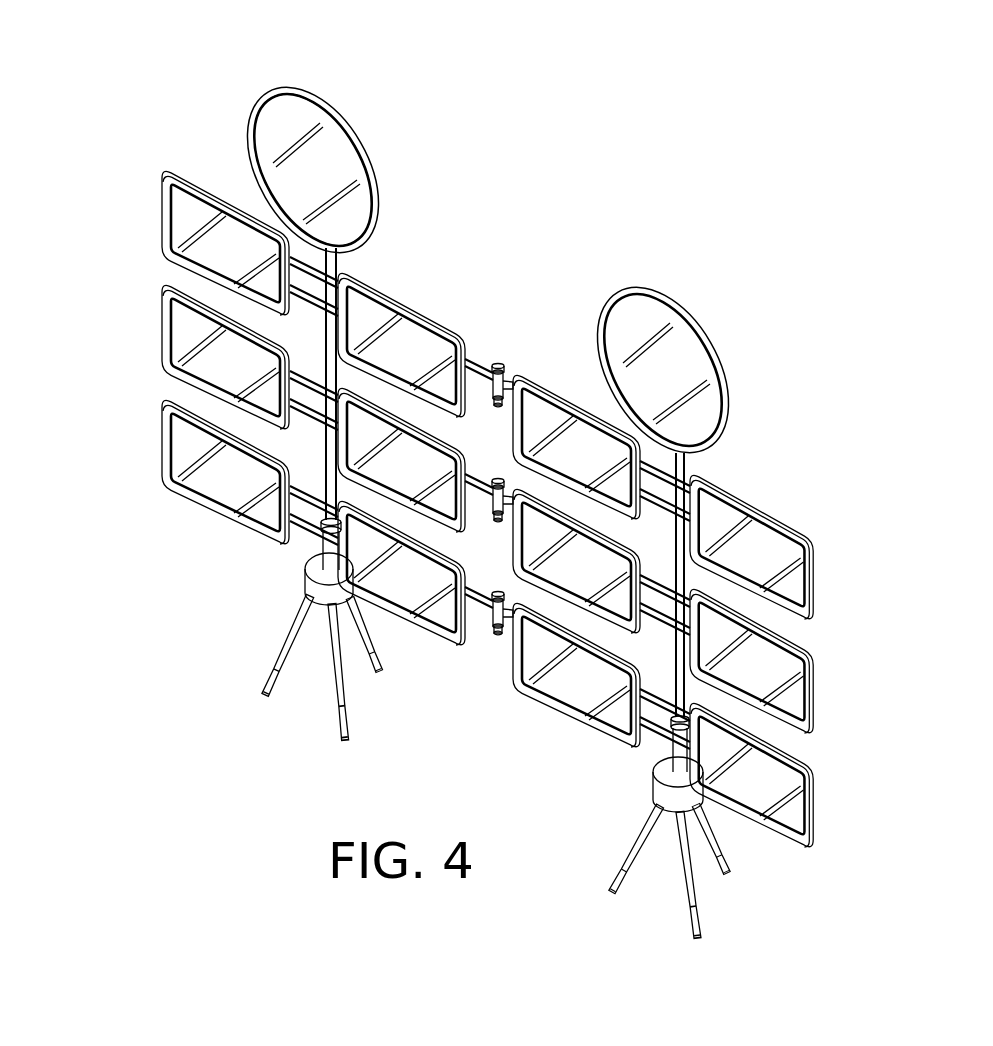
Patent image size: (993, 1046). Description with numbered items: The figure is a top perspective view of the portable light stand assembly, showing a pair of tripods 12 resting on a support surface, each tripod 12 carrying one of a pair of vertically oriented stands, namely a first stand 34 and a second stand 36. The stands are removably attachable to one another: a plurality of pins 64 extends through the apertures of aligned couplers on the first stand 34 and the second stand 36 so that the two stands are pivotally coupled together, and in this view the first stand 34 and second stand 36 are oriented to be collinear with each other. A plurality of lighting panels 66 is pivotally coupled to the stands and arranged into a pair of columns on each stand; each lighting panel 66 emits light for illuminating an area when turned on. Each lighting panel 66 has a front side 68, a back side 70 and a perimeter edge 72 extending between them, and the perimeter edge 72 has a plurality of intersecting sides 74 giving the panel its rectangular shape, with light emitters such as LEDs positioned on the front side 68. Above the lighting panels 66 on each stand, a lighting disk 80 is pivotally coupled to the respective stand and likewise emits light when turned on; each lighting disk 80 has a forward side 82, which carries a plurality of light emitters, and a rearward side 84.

The tripod 12 is at (276, 621).
The first stand 34 is at (314, 329).
The second stand 36 is at (706, 510).
The pin 64 is at (498, 364).
The lighting panel 66 is at (738, 572).
The front side 68 is at (810, 543).
The back side 70 is at (814, 555).
The perimeter edge 72 is at (180, 496).
The intersecting sides 74 is at (163, 437).
The lighting disk 80 is at (457, 247).
The forward side 82 is at (268, 165).
The rearward side 84 is at (372, 177).